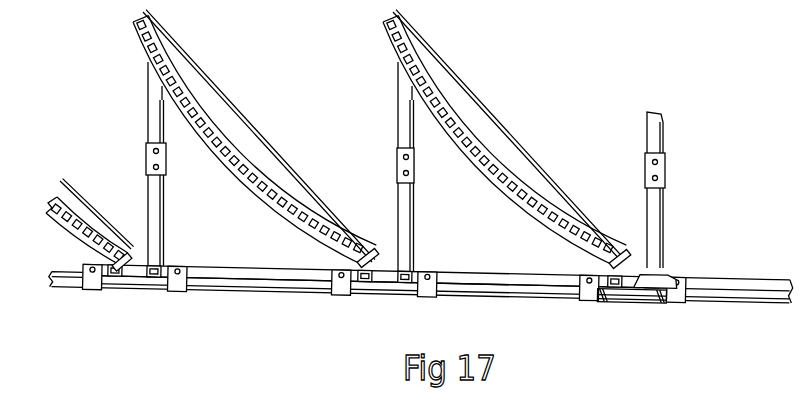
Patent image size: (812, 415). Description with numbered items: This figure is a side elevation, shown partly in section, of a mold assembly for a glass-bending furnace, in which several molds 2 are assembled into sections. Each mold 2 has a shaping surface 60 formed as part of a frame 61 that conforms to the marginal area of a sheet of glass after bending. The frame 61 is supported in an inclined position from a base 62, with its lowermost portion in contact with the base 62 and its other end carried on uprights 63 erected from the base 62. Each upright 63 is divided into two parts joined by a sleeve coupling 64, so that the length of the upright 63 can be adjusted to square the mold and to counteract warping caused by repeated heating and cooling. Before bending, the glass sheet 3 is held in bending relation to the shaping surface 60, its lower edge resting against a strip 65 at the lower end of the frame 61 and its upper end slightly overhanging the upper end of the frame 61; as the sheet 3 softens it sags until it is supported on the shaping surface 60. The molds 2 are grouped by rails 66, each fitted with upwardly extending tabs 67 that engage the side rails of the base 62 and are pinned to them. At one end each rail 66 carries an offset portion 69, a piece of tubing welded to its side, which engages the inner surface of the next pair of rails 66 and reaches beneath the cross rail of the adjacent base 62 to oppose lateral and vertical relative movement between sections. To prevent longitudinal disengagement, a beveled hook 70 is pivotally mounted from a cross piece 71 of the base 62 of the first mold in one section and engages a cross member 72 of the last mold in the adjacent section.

The mold 2 is at (147, 107).
The glass sheet 3 is at (283, 155).
The shaping surface 60 is at (234, 143).
The frame 61 is at (236, 158).
The base 62 is at (244, 272).
The upright 63 is at (150, 196).
The sleeve coupling 64 is at (146, 160).
The strip 65 is at (371, 255).
The rail 66 is at (267, 288).
The tab 67 is at (177, 290).
The offset portion 69 is at (642, 298).
The hook 70 is at (661, 269).
The cross piece 71 is at (605, 292).
The cross member 72 is at (656, 292).